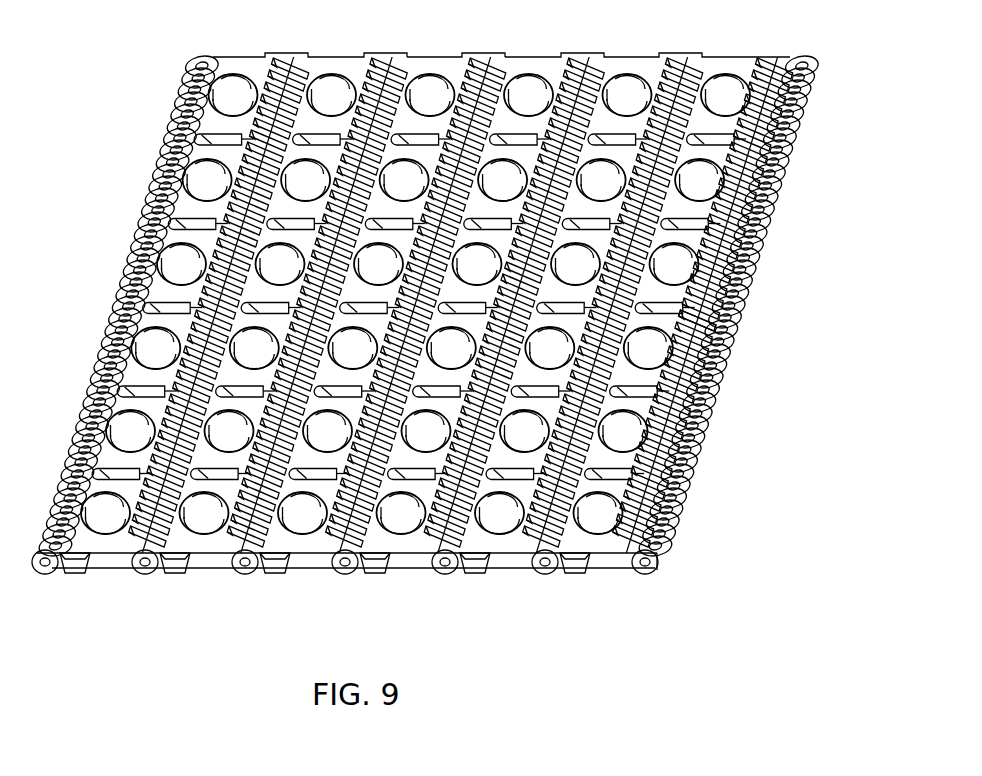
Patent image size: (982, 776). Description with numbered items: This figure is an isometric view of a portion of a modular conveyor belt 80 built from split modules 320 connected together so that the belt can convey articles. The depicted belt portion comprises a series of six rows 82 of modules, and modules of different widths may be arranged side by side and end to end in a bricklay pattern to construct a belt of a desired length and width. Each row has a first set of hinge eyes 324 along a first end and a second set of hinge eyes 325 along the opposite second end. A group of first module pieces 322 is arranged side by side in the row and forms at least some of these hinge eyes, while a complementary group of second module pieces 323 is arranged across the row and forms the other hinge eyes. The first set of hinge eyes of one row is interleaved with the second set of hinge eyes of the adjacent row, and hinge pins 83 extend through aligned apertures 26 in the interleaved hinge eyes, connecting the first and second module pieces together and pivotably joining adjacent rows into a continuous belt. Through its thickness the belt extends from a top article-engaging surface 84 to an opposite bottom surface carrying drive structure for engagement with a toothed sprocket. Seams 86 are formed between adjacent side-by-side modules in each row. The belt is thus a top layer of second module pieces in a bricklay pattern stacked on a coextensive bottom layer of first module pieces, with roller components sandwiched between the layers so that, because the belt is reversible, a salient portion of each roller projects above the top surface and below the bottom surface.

The conveyor belt 80 is at (710, 477).
The rows 82 is at (248, 57).
The top article-engaging surface 84 is at (430, 63).
The seams 86 is at (727, 215).
The modules 320 is at (677, 318).
The first module pieces 322 is at (130, 572).
The second module pieces 323 is at (66, 568).
The first set of hinge eyes 324 is at (787, 93).
The second set of hinge eyes 325 is at (150, 182).
The apertures 26 is at (345, 570).
The hinge pins 83 is at (545, 575).